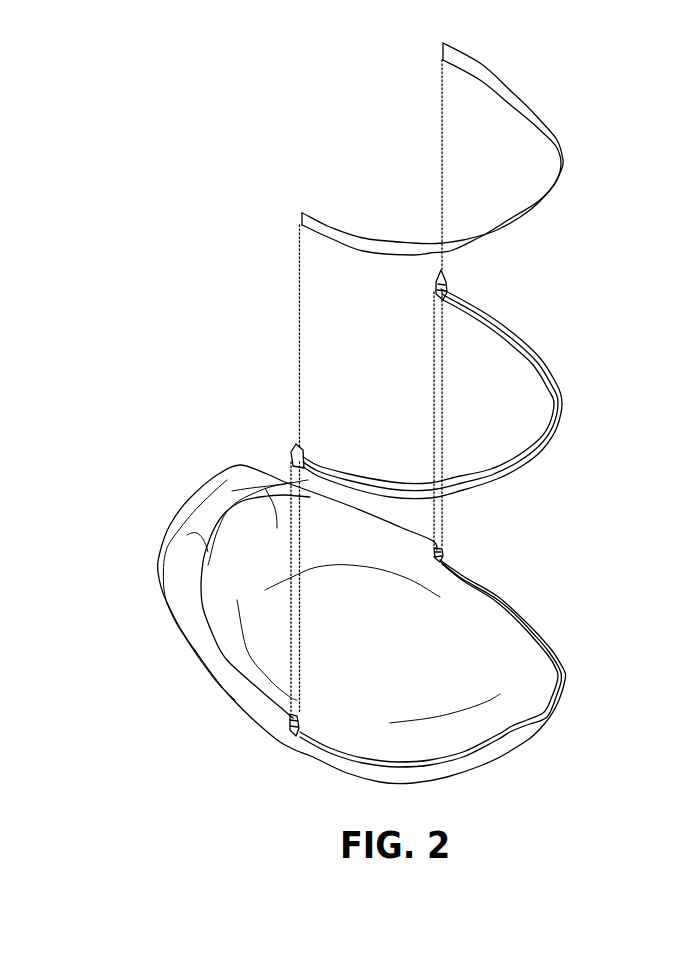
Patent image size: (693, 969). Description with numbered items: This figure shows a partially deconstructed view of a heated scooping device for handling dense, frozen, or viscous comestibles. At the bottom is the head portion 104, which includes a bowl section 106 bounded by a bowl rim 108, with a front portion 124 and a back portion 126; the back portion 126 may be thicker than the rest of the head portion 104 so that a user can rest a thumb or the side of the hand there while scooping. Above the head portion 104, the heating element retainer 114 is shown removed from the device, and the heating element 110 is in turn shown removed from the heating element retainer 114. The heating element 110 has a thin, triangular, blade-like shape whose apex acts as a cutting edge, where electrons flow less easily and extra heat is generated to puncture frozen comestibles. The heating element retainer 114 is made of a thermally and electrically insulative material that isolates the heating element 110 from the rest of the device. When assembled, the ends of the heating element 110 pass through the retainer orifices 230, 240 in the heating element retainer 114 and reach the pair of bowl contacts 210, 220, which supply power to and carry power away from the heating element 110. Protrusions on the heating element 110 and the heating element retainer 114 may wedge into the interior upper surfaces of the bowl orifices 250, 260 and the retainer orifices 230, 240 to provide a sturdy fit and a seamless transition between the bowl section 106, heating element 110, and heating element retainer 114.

The head portion 104 is at (162, 582).
The bowl section 106 is at (263, 615).
The bowl rim 108 is at (258, 687).
The heating element 110 is at (556, 197).
The heating element retainer 114 is at (554, 432).
The front portion 124 is at (492, 754).
The back portion 126 is at (217, 508).
The bowl contact 210 is at (293, 732).
The bowl contact 220 is at (443, 556).
The retainer orifice 230 is at (303, 453).
The retainer orifice 240 is at (446, 285).
The bowl orifice 250 is at (289, 720).
The bowl orifice 260 is at (439, 543).